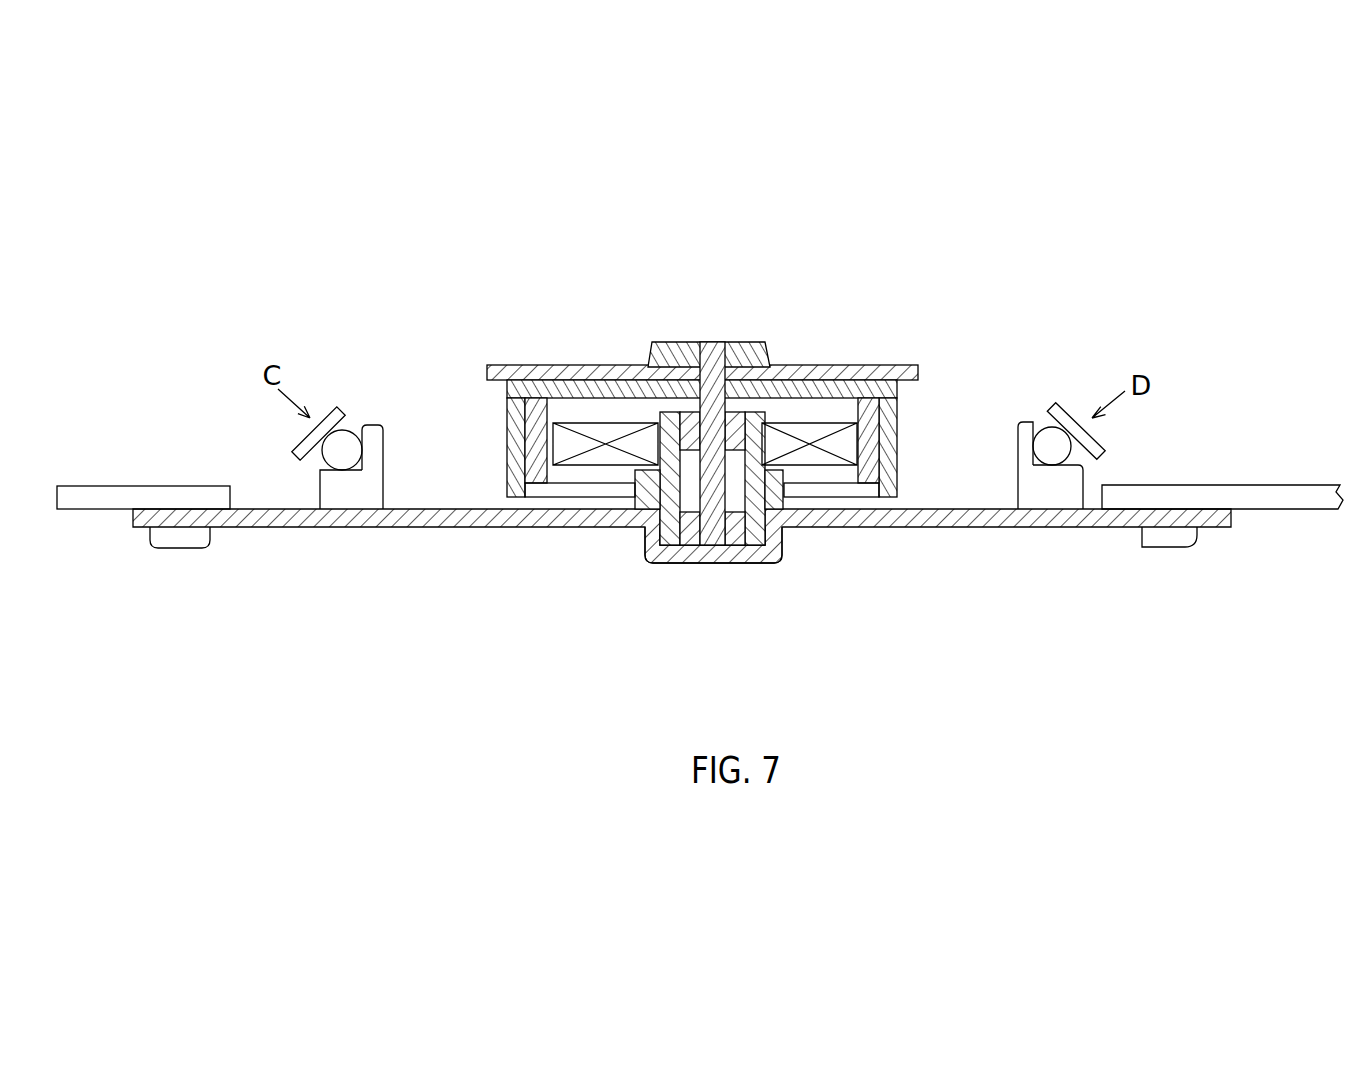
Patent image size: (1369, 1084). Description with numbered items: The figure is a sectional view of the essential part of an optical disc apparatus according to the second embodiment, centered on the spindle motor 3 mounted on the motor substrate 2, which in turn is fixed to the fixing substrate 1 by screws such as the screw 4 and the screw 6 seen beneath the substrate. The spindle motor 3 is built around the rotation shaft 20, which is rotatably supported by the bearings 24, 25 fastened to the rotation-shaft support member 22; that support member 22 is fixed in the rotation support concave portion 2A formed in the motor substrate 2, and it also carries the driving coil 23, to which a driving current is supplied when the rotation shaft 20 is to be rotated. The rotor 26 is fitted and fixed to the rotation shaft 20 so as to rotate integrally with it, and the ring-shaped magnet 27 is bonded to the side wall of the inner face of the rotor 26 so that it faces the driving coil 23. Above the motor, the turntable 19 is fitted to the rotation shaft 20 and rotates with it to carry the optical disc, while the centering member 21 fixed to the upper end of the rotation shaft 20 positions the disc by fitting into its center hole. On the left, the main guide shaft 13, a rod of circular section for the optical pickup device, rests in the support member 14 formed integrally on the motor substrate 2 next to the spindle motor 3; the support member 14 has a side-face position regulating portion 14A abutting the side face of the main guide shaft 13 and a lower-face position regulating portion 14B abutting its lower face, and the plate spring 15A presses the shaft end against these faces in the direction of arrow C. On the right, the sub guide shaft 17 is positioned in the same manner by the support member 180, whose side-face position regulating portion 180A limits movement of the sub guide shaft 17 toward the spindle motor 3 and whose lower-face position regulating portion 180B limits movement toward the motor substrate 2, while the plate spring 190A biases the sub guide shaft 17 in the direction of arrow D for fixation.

The fixing substrate 1 is at (97, 497).
The motor substrate 2 is at (682, 598).
The rotation support concave portion 2A is at (742, 565).
The spindle motor 3 is at (705, 443).
The screw 4 is at (177, 548).
The screw 6 is at (1153, 548).
The main guide shaft 13 is at (343, 450).
The support member 14 is at (276, 444).
The side-face position regulating portion 14A is at (360, 423).
The lower-face position regulating portion 14B is at (318, 488).
The plate spring 15A is at (292, 450).
The sub guide shaft 17 is at (1048, 426).
The turntable 19 is at (908, 367).
The rotation shaft 20 is at (713, 342).
The centering member 21 is at (763, 342).
The rotation-shaft support member 22 is at (653, 498).
The driving coil 23 is at (823, 458).
The bearing 24 is at (650, 366).
The bearing 25 is at (678, 565).
The rotor 26 is at (512, 449).
The magnet 27 is at (876, 456).
The support member 180 is at (1100, 458).
The side-face position regulating portion 180A is at (1033, 421).
The lower-face position regulating portion 180B is at (1081, 477).
The plate spring 190A is at (1068, 402).